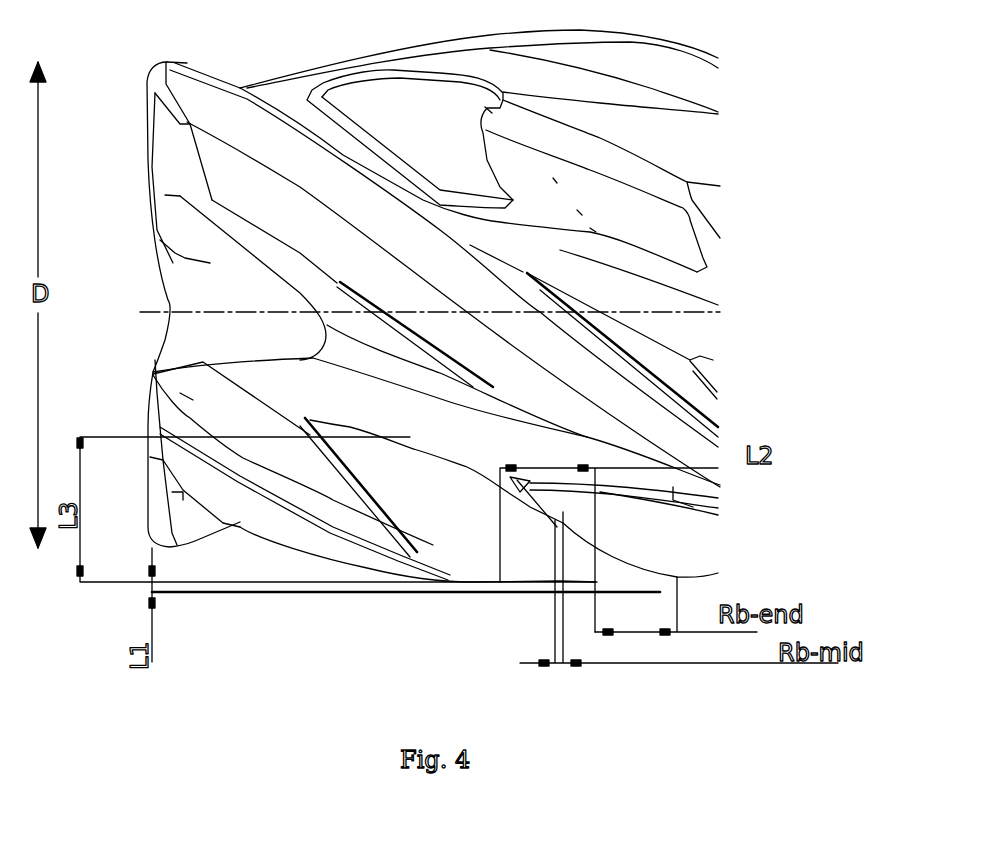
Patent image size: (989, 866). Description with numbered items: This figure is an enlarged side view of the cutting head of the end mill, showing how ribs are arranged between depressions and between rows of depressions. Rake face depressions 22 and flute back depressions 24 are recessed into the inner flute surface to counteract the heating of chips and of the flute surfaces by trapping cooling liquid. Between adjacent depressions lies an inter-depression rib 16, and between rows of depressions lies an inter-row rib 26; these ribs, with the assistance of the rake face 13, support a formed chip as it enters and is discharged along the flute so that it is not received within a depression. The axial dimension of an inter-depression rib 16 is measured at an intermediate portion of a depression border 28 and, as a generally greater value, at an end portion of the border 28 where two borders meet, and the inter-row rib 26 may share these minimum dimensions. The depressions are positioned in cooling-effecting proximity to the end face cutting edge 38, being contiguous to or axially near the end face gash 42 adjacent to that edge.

The end face cutting edge 38 is at (150, 125).
The end face gash 42 is at (190, 352).
The flute back depression 24 is at (710, 208).
The inter-row rib 26 is at (708, 340).
The inter-depression rib 16 is at (725, 398).
The rake face depression 22 is at (693, 537).
The rake face 13 is at (730, 568).
The depression border 28 is at (467, 468).